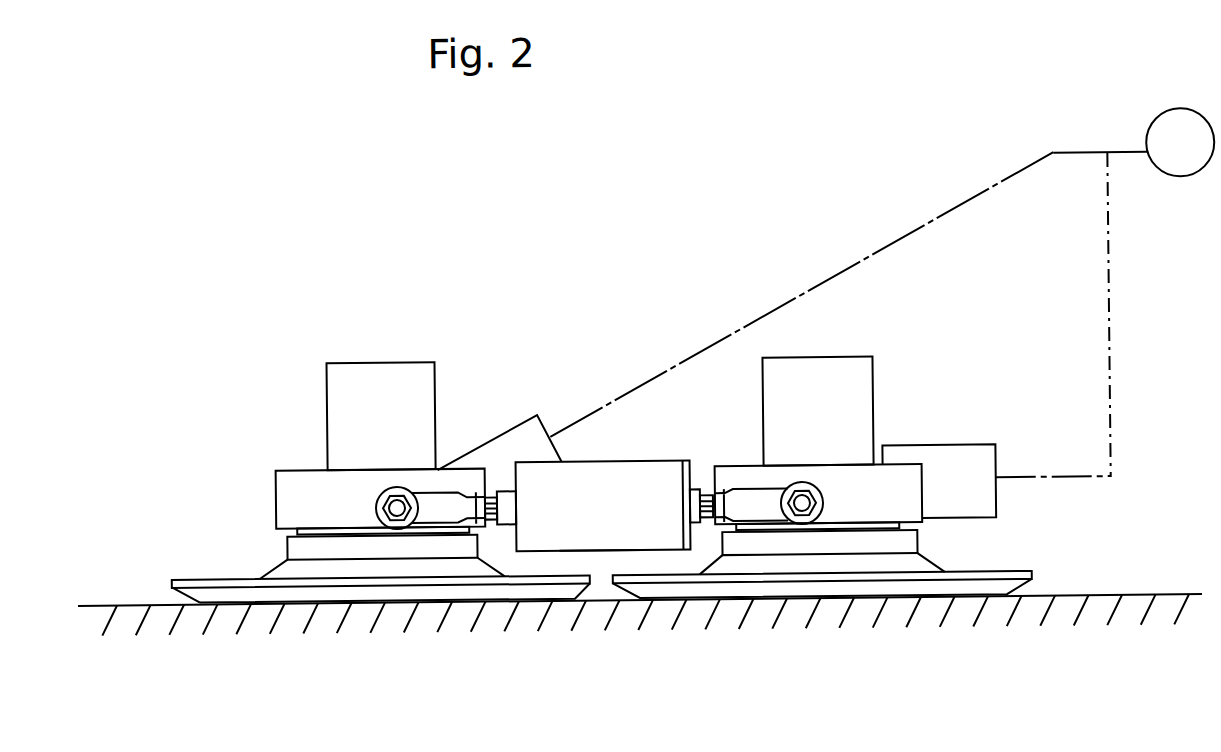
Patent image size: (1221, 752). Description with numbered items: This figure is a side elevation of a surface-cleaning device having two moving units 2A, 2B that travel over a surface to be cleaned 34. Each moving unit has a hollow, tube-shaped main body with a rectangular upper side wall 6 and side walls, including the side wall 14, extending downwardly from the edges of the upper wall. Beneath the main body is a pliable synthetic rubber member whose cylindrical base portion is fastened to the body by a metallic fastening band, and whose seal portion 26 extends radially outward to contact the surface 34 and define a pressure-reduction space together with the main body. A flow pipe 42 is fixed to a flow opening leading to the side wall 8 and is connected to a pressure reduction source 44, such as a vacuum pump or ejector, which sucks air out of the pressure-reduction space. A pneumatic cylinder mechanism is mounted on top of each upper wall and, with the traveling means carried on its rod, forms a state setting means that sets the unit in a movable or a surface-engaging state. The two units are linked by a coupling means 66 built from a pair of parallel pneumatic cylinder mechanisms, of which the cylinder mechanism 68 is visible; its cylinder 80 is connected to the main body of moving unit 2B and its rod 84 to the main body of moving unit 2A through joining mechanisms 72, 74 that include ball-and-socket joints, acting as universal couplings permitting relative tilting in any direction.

The moving unit 2A is at (232, 429).
The moving unit 2B is at (953, 398).
The upper side wall 6 is at (344, 467).
The side wall 8 is at (479, 476).
The side wall 14 is at (279, 483).
The seal portion 26 is at (180, 590).
The surface to be cleaned 34 is at (1108, 610).
The flow pipe 42 is at (492, 441).
The pressure reduction source 44 is at (1170, 163).
The coupling means 66 is at (664, 451).
The pneumatic cylinder mechanism 68 is at (619, 459).
The joining mechanism 72 is at (768, 481).
The joining mechanism 74 is at (427, 484).
The cylinder 80 is at (602, 550).
The rod 84 is at (508, 516).